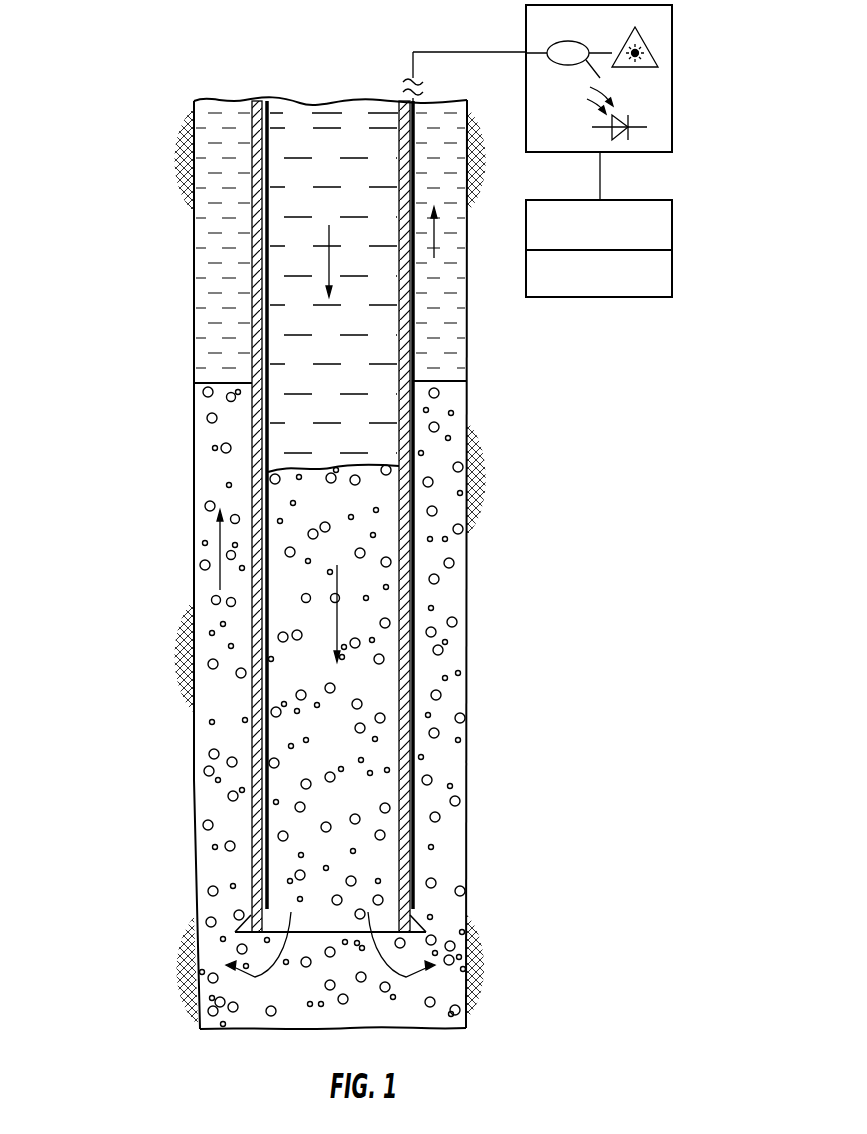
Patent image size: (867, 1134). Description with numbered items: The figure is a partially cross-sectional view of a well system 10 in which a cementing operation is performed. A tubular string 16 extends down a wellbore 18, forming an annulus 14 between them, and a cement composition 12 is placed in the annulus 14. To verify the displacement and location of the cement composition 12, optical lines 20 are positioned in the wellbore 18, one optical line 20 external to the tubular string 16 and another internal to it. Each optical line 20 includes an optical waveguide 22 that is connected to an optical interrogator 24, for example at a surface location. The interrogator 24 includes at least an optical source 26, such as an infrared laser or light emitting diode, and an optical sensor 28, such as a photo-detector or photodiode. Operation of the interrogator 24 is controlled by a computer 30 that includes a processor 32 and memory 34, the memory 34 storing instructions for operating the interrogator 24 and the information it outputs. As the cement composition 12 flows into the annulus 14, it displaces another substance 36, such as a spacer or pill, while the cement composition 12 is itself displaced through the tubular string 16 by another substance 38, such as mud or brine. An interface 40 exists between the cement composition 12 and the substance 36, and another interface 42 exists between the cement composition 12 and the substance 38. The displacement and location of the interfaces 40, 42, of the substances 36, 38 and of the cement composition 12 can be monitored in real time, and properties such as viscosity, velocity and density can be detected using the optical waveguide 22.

The system 10 is at (112, 60).
The cement composition 12 is at (370, 775).
The annulus 14 is at (225, 812).
The tubular string 16 is at (250, 248).
The wellbore 18 is at (194, 320).
The optical line 20 is at (415, 830).
The optical waveguide 22 is at (413, 66).
The optical interrogator 24 is at (680, 59).
The optical source 26 is at (641, 40).
The optical sensor 28 is at (637, 127).
The computer 30 is at (680, 263).
The processor 32 is at (657, 200).
The memory 34 is at (620, 297).
The substance 36 is at (453, 353).
The substance 38 is at (297, 108).
The interface 40 is at (452, 382).
The interface 42 is at (285, 467).